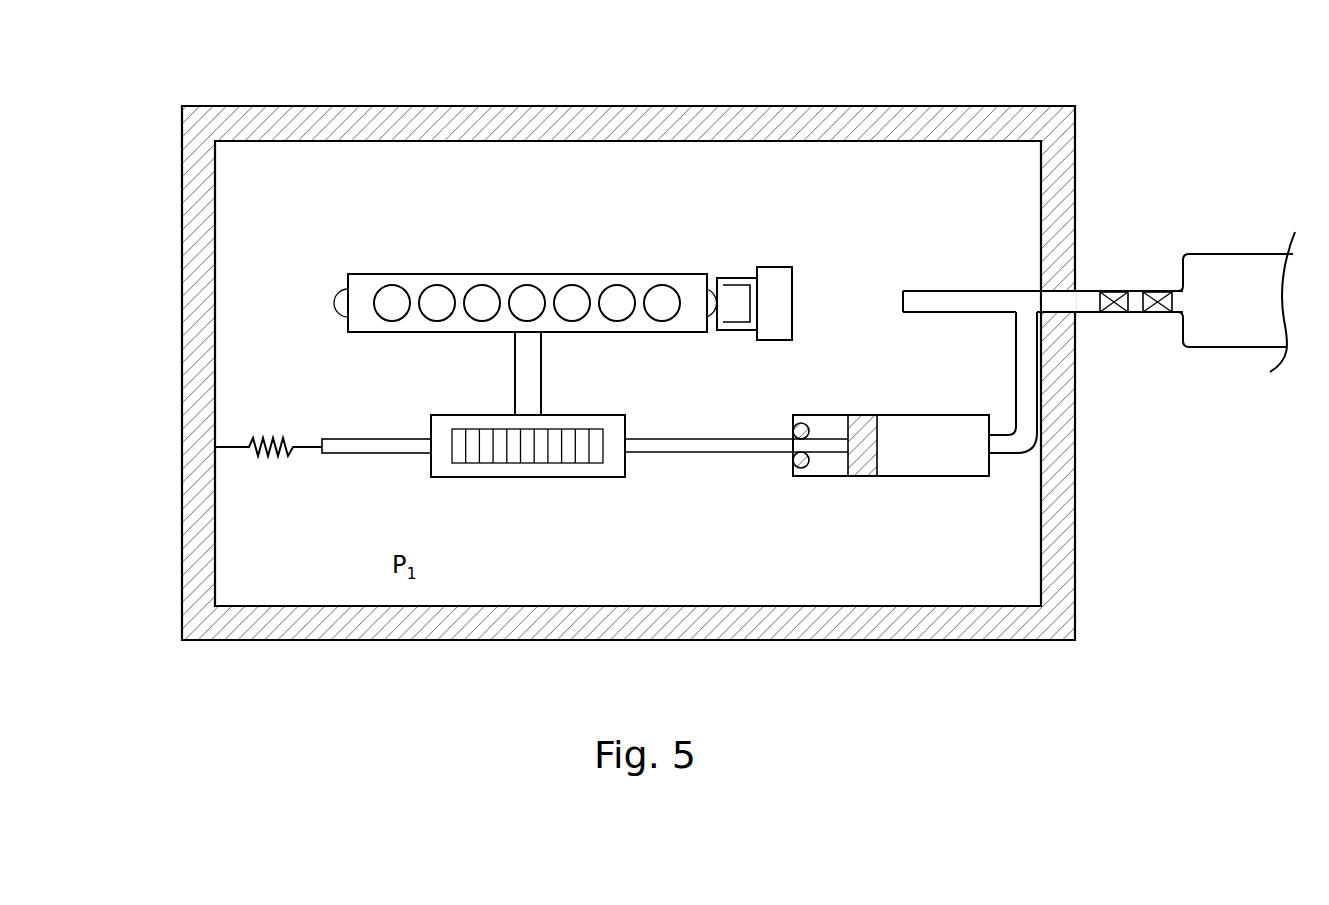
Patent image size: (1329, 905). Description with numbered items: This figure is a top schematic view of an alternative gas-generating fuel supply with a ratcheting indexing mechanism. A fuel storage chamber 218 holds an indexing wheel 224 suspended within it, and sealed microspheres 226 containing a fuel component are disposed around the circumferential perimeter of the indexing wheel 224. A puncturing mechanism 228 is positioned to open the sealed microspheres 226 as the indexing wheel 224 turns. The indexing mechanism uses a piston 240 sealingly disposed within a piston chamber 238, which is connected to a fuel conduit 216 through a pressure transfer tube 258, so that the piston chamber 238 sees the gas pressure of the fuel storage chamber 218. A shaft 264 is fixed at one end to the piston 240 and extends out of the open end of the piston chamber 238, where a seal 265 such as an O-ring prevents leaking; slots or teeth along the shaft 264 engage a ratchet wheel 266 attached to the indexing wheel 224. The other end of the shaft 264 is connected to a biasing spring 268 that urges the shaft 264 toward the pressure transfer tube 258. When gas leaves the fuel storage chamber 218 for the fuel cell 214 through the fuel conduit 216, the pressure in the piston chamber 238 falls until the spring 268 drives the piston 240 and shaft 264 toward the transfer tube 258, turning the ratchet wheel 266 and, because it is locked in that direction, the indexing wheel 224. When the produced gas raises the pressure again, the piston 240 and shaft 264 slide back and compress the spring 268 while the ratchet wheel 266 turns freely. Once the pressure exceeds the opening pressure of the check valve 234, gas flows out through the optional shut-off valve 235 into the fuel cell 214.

The fuel cell 214 is at (1243, 275).
The fuel conduit 216 is at (1137, 290).
The fuel storage chamber 218 is at (235, 186).
The indexing wheel 224 is at (467, 275).
The sealed microspheres 226 is at (662, 303).
The puncturing mechanism 228 is at (742, 283).
The check valve 234 is at (1113, 312).
The shut-off valve 235 is at (1157, 312).
The piston chamber 238 is at (962, 477).
The piston 240 is at (860, 465).
The pressure transfer tube 258 is at (1028, 445).
The shaft 264 is at (707, 452).
The seal 265 is at (797, 470).
The ratchet wheel 266 is at (578, 477).
The biasing spring 268 is at (282, 455).